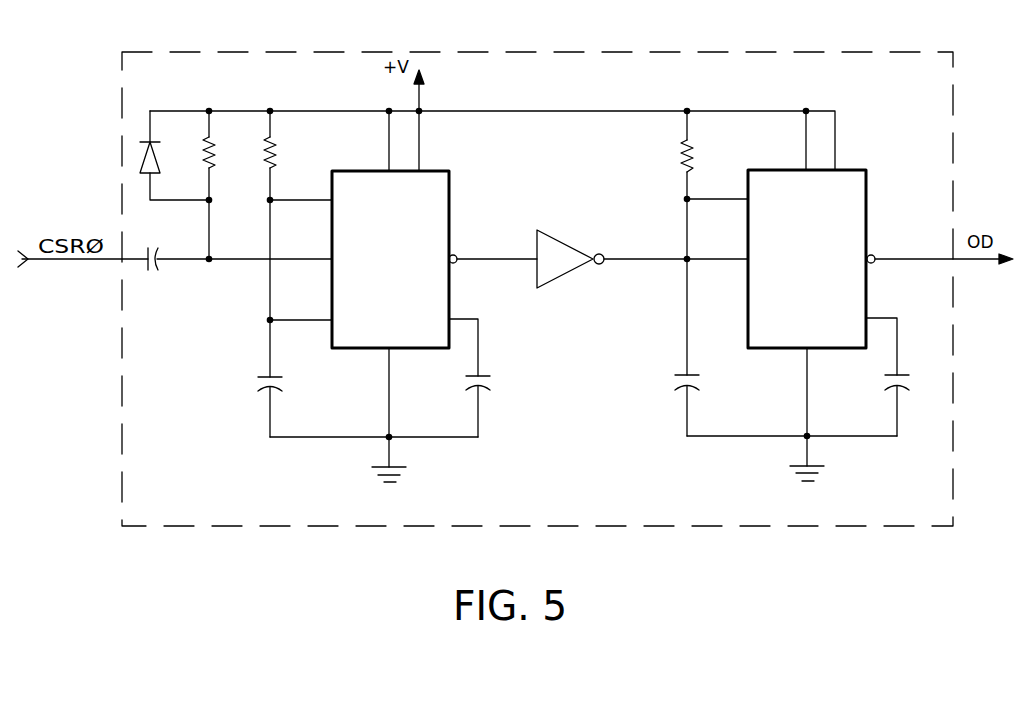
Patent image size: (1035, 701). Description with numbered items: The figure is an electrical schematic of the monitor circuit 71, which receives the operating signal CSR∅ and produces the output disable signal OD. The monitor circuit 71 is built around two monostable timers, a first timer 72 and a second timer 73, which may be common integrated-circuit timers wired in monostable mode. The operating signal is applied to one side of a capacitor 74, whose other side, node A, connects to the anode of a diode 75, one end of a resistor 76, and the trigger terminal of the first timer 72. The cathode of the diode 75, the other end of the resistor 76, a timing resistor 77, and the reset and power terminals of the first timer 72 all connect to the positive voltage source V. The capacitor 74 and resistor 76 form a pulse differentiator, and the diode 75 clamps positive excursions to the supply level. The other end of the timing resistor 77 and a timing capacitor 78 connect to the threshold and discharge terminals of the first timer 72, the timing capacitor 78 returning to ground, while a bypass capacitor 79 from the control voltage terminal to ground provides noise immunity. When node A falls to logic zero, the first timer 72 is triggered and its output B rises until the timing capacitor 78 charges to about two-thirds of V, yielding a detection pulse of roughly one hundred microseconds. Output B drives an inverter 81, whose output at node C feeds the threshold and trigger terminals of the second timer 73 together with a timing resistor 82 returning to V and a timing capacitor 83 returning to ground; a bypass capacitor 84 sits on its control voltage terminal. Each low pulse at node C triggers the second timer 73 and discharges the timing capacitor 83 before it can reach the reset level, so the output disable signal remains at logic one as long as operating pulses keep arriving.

The monitor circuit 71 is at (918, 84).
The first timer 72 is at (452, 186).
The second timer 73 is at (868, 186).
The capacitor 74 is at (144, 272).
The diode 75 is at (157, 156).
The resistor 76 is at (214, 150).
The timing resistor 77 is at (276, 150).
The timing capacitor 78 is at (262, 377).
The bypass capacitor 79 is at (483, 383).
The inverter 81 is at (561, 276).
The timing resistor 82 is at (692, 152).
The timing capacitor 83 is at (691, 378).
The bypass capacitor 84 is at (900, 378).